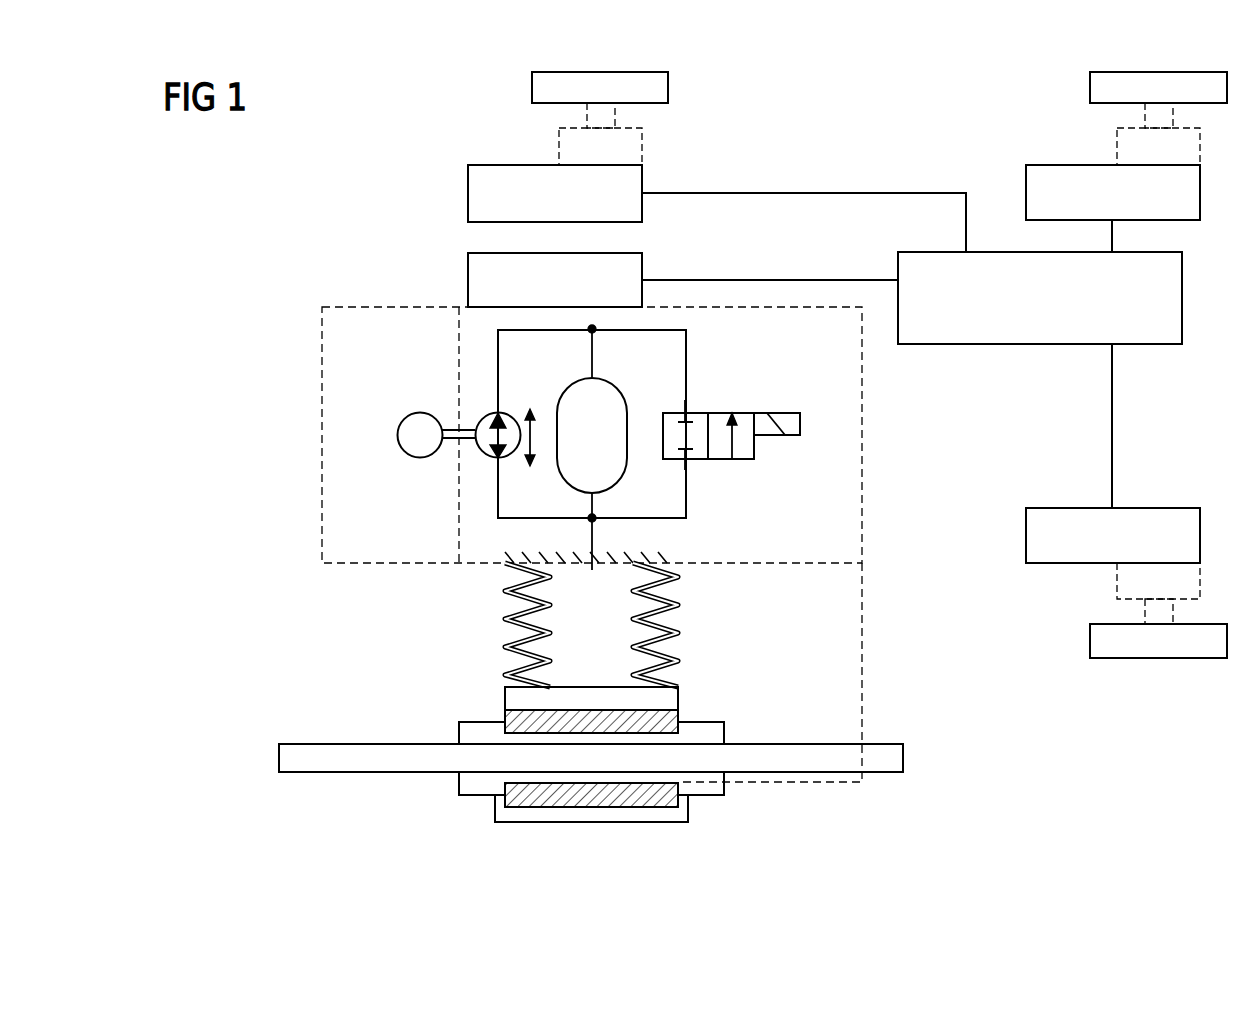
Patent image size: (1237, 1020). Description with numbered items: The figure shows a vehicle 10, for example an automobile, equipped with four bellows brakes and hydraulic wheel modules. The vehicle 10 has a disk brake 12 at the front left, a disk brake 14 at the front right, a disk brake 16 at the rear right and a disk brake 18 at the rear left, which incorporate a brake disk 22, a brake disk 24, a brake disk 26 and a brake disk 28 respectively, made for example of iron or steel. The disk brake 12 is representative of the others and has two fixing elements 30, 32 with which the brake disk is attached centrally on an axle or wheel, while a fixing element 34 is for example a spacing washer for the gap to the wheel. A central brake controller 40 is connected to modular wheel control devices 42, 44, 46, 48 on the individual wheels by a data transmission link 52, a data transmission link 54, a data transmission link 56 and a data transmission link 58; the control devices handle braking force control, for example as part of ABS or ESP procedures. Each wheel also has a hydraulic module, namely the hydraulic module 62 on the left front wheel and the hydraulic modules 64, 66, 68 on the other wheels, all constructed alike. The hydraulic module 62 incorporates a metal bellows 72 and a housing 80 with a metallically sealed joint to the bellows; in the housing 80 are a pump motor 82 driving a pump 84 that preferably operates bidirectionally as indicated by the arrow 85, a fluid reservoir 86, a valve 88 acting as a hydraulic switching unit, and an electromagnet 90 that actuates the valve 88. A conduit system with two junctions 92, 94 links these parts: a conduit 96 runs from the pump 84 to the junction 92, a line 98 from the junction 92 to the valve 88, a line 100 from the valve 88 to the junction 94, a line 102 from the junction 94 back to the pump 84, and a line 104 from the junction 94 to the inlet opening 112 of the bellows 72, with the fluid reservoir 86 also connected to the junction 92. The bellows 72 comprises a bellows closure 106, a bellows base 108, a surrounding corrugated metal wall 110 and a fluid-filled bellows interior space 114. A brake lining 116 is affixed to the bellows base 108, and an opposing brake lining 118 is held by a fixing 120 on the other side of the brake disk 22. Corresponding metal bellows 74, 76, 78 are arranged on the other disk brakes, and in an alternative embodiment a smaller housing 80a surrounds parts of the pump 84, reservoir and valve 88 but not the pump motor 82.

The vehicle 10 is at (437, 240).
The disk brake 12 is at (350, 637).
The disk brake 14 is at (466, 126).
The disk brake 16 is at (1028, 128).
The disk brake 18 is at (1030, 605).
The brake disk 22 is at (903, 758).
The brake disk 24 is at (532, 87).
The brake disk 26 is at (1090, 87).
The brake disk 28 is at (1090, 645).
The fixing element 30 is at (459, 733).
The fixing element 32 is at (459, 783).
The fixing element 34 is at (495, 808).
The central brake controller 40 is at (973, 344).
The modular wheel control device 42 is at (468, 278).
The modular wheel control device 44 is at (468, 189).
The modular wheel control device 46 is at (1026, 170).
The modular wheel control device 48 is at (1026, 540).
The data transmission link 52 is at (740, 280).
The data transmission link 54 is at (740, 193).
The data transmission link 56 is at (1112, 232).
The data transmission link 58 is at (1112, 428).
The hydraulic module 62 is at (313, 327).
The hydraulic module 64 is at (559, 148).
The hydraulic module 66 is at (1117, 148).
The hydraulic module 68 is at (1117, 583).
The metal bellows 72 is at (503, 651).
The metal bellows 74 is at (587, 120).
The metal bellows 76 is at (1145, 120).
The metal bellows 78 is at (1145, 614).
The housing 80 is at (862, 428).
The housing 80a is at (459, 520).
The pump motor 82 is at (405, 413).
The pump 84 is at (483, 413).
The arrow 85 is at (538, 430).
The fluid reservoir 86 is at (565, 398).
The valve 88 is at (718, 413).
The electromagnet 90 is at (790, 413).
The junction 92 is at (592, 329).
The junction 94 is at (592, 520).
The conduit 96 is at (498, 347).
The line 98 is at (686, 345).
The line 100 is at (686, 500).
The line 102 is at (498, 498).
The line 104 is at (592, 536).
The bellows closure 106 is at (655, 555).
The bellows base 108 is at (678, 690).
The corrugated metal wall 110 is at (508, 568).
The inlet opening 112 is at (592, 570).
The bellows interior space 114 is at (640, 655).
The brake lining 116 is at (678, 715).
The opposing brake lining 118 is at (678, 800).
The fixing 120 is at (862, 690).